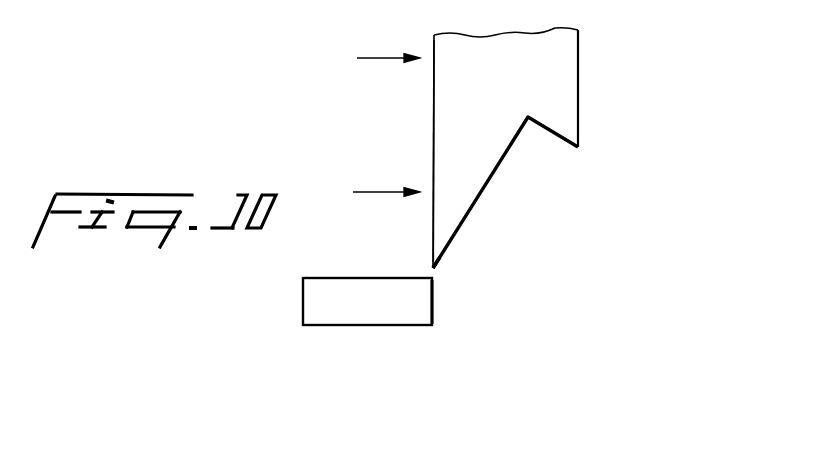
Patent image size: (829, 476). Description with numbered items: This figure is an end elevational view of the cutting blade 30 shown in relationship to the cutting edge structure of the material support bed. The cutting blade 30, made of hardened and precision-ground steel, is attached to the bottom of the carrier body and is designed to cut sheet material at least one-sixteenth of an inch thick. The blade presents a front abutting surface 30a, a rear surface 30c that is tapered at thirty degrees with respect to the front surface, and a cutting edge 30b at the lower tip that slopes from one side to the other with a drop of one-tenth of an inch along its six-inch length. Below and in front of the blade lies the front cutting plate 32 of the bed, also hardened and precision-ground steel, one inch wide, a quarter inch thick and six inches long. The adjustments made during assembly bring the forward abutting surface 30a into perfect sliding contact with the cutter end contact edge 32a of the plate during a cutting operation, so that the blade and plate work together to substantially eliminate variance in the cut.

The cutting blade 30 is at (575, 66).
The front abutting surface 30a is at (435, 110).
The cutting edge 30b is at (450, 277).
The rear surface 30c is at (490, 183).
The front cutting plate 32 is at (330, 315).
The cutter end contact edge 32a is at (452, 320).